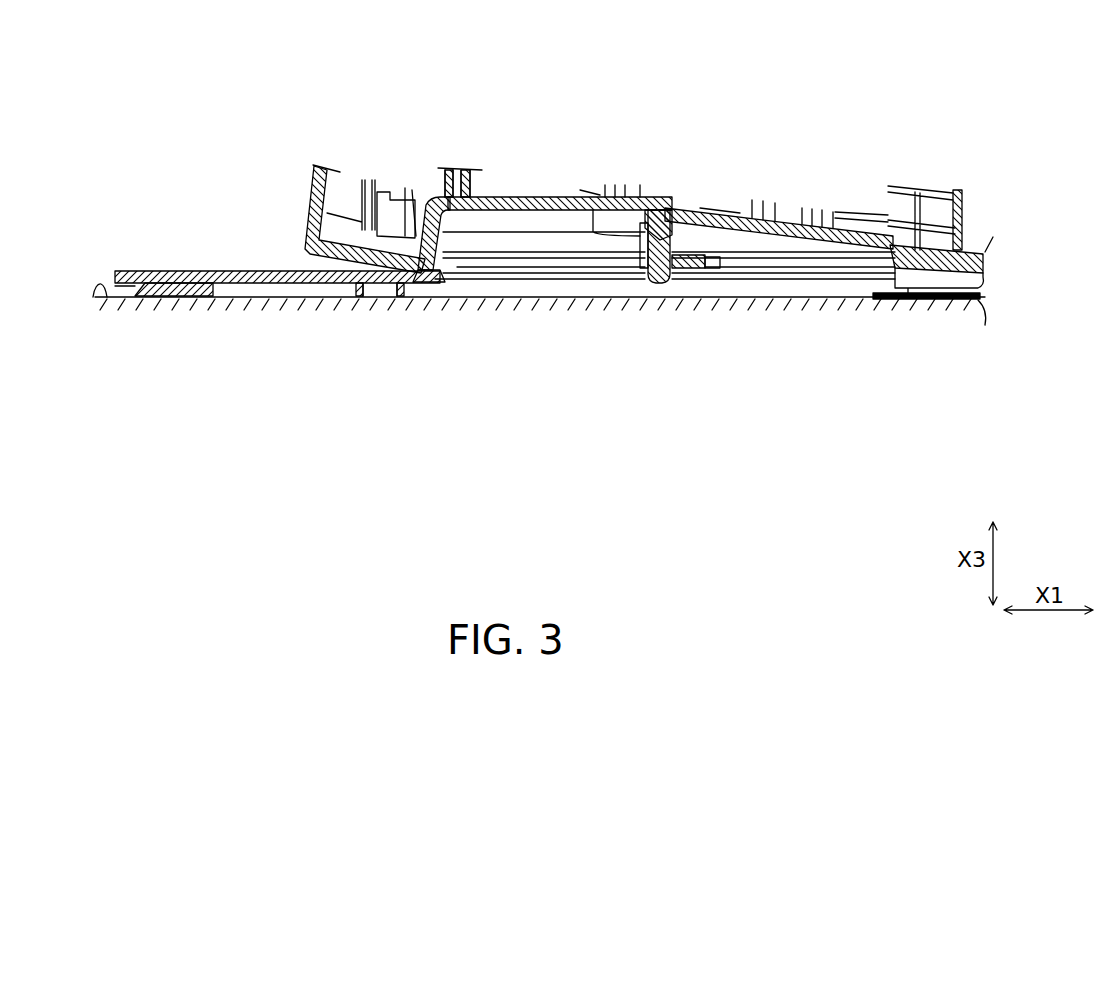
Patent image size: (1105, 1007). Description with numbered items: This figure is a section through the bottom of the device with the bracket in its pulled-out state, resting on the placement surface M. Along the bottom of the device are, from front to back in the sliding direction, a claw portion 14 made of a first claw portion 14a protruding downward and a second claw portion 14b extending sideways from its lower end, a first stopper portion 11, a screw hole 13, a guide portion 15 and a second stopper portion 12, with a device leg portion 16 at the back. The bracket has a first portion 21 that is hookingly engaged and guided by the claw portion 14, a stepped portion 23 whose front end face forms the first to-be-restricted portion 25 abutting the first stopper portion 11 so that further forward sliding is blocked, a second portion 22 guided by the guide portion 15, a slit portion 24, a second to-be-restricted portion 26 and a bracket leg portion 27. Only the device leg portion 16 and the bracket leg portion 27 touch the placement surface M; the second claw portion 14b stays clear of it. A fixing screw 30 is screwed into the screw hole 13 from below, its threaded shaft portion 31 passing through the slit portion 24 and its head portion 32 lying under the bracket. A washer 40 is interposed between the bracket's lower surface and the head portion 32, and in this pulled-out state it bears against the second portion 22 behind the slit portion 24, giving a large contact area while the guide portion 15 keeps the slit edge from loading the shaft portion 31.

The first stopper portion 11 is at (393, 192).
The second stopper portion 12 is at (890, 242).
The screw hole 13 is at (657, 210).
The claw portion 14 is at (361, 357).
The first claw portion 14a is at (353, 298).
The second claw portion 14b is at (392, 298).
The guide portion 15 is at (770, 270).
The device leg portion 16 is at (932, 300).
The first portion 21 is at (227, 298).
The second portion 22 is at (710, 279).
The stepped portion 23 is at (442, 282).
The slit portion 24 is at (496, 262).
The first to-be-restricted portion 25 is at (480, 197).
The second to-be-restricted portion 26 is at (737, 205).
The bracket leg portion 27 is at (163, 298).
The fixing screw 30 is at (668, 319).
The shaft portion 31 is at (670, 280).
The head portion 32 is at (642, 290).
The washer 40 is at (626, 278).
The placement surface M is at (94, 298).